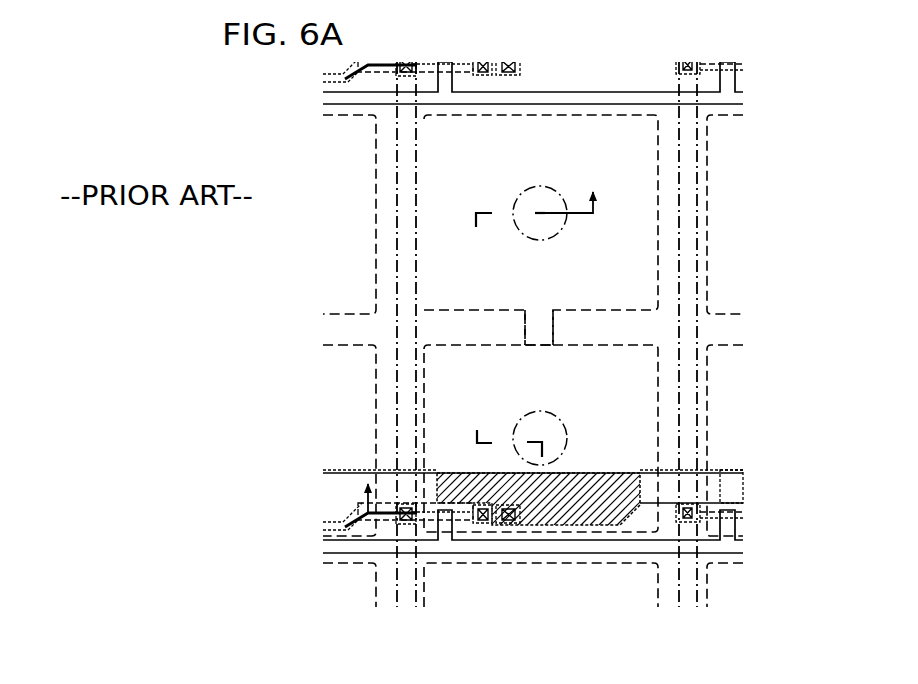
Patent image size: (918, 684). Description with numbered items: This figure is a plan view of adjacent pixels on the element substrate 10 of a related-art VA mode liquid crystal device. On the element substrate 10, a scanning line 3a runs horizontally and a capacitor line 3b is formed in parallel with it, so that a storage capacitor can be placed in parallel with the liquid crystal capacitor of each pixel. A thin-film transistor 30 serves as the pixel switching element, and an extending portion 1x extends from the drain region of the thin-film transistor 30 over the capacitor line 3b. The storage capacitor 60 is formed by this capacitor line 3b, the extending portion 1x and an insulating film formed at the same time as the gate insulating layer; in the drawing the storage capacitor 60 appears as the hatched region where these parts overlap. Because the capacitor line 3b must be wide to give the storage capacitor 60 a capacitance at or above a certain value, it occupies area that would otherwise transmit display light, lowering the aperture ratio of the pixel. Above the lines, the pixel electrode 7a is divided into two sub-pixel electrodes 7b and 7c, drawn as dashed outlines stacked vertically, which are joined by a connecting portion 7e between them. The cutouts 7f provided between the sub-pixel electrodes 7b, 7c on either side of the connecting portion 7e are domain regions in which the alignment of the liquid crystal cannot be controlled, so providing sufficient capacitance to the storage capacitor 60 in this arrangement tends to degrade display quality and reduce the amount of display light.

The element substrate 10 is at (782, 159).
The pixel electrode 7a is at (777, 180).
The sub-pixel electrode 7b is at (658, 367).
The sub-pixel electrode 7c is at (658, 225).
The connecting portion 7e is at (545, 340).
The cutouts 7f is at (532, 306).
The extending portion 1x is at (590, 470).
The scanning line 3a is at (319, 539).
The capacitor line 3b is at (318, 472).
The thin-film transistor 30 is at (466, 546).
The storage capacitor 60 is at (562, 507).